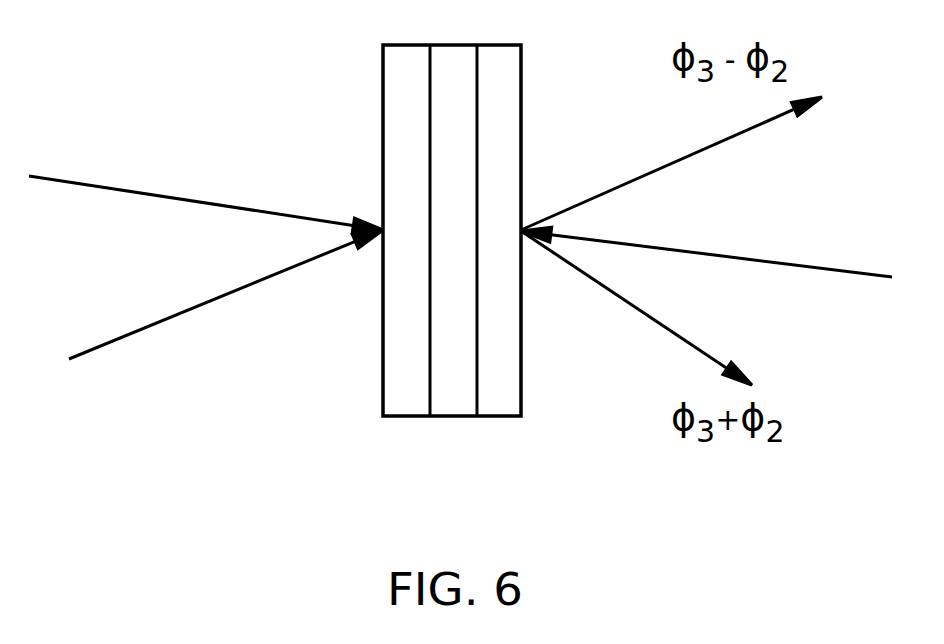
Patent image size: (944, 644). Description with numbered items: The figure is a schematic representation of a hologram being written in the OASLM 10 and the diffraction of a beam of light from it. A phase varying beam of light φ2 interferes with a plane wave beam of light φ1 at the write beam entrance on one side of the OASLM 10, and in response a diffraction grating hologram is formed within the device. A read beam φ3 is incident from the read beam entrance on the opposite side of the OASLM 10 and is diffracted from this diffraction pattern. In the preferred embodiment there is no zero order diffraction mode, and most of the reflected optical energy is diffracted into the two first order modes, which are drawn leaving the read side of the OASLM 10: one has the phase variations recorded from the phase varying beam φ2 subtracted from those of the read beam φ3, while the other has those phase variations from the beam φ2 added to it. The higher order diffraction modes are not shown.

The optically addressed spatial light modulator (OASLM) 10 is at (452, 278).
The input beam phi- 1 is at (226, 296).
The input beam phi- 2 is at (206, 193).
The readout beam phi- 3 is at (706, 281).